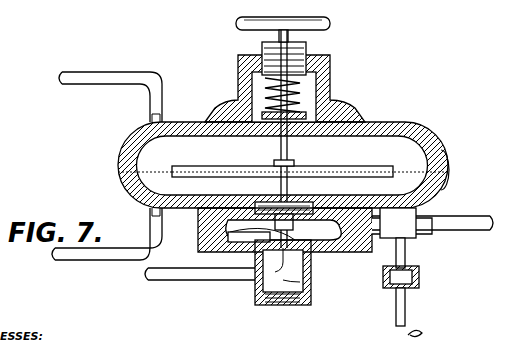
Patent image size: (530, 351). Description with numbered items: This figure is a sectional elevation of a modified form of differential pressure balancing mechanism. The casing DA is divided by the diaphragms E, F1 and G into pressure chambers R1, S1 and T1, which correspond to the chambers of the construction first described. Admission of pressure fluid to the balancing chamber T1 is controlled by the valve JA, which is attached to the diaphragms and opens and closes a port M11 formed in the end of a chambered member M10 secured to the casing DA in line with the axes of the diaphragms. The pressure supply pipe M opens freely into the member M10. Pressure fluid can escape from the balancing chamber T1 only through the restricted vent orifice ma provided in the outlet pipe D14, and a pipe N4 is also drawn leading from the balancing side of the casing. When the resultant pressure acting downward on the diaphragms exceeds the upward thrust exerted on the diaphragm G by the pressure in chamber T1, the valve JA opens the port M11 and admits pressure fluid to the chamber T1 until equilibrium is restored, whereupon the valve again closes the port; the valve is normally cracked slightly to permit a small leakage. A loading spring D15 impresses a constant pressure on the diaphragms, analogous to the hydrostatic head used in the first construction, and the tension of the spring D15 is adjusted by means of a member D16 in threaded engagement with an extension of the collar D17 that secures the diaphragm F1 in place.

The diaphragm E is at (407, 170).
The casing DA is at (449, 156).
The pressure chamber R' R1 is at (282, 160).
The pressure chamber S' S1 is at (282, 184).
The diaphragm F1 is at (258, 112).
The loading spring D15 is at (300, 94).
The adjusting member D16 is at (302, 48).
The collar D17 is at (320, 66).
The diaphragm G is at (257, 196).
The balancing chamber T' T1 is at (338, 244).
The port M11 is at (228, 232).
The chambered member M10 is at (306, 286).
The valve JA is at (304, 268).
The pressure supply pipe M is at (183, 281).
The pipe N4 is at (466, 238).
The restricted vent orifice ma is at (410, 264).
The outlet pipe D14 is at (405, 312).